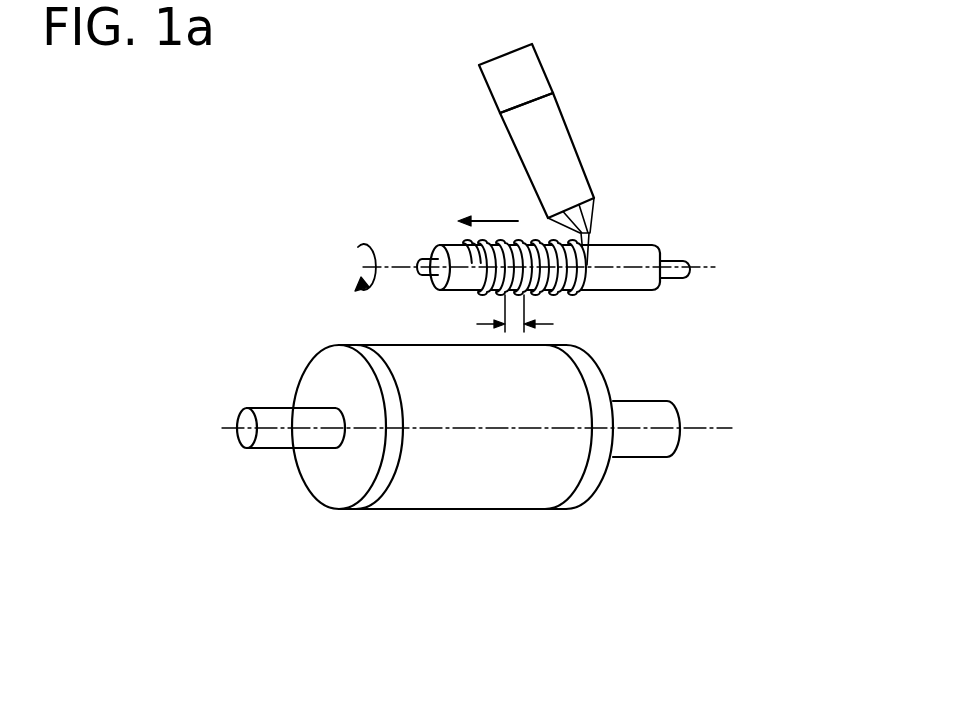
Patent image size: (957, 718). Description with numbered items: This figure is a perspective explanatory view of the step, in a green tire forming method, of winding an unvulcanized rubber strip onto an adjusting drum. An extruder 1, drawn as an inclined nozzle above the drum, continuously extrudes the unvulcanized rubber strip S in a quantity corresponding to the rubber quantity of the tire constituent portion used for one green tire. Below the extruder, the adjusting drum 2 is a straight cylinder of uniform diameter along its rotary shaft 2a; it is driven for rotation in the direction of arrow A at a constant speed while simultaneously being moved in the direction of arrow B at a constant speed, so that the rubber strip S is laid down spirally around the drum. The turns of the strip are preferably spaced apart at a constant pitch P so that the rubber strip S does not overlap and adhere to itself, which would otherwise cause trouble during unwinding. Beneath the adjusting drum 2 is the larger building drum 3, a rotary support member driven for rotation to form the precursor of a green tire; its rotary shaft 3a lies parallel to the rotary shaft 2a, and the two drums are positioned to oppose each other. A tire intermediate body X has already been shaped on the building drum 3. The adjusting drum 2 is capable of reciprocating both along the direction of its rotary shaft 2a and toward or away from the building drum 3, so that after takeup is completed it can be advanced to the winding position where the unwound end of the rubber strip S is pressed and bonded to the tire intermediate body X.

The extruder 1 is at (552, 120).
The adjusting drum 2 is at (665, 252).
The rotary shaft of the adjusting drum 2a is at (703, 272).
The building drum 3 is at (597, 492).
The rotary shaft of the building drum 3a is at (720, 428).
The rubber strip S is at (597, 243).
The arrow A is at (350, 260).
The arrow B is at (488, 203).
The pitch P is at (527, 318).
The tire intermediate body X is at (507, 503).